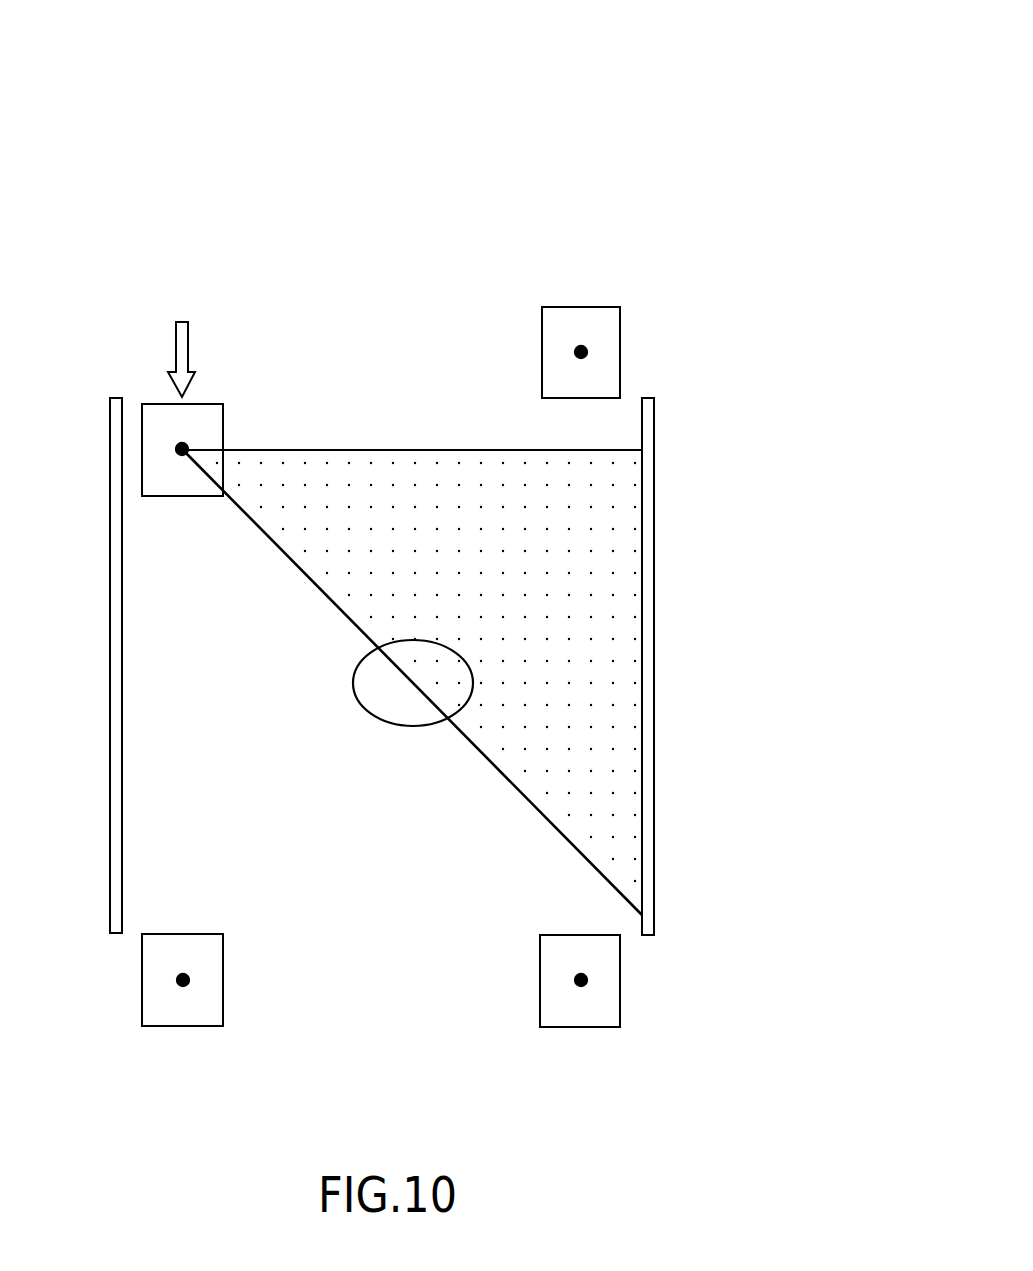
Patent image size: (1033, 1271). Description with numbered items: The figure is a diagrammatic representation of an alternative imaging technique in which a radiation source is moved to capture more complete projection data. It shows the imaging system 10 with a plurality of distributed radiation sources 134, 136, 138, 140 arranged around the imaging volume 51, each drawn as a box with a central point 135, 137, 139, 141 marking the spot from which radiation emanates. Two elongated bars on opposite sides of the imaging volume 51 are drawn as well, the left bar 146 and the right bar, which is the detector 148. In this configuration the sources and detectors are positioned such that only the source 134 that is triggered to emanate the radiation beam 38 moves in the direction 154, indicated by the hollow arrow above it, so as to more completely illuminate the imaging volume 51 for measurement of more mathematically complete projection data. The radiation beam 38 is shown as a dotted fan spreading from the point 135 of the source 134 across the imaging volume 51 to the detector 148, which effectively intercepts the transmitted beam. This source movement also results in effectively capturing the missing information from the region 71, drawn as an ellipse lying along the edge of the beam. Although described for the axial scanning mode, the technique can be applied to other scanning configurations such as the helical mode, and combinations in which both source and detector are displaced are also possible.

The imaging system 10 is at (762, 87).
The radiation beam 38 is at (334, 588).
The imaging volume 51 is at (415, 824).
The region 71 is at (374, 693).
The source 134 is at (182, 497).
The first transducer element 135 is at (189, 447).
The source 136 is at (223, 980).
The second transducer element 137 is at (182, 974).
The source 138 is at (542, 354).
The third transducer element 139 is at (580, 346).
The source 140 is at (540, 988).
The fourth transducer element 141 is at (581, 987).
The left wall 146 is at (110, 687).
The detector 148 is at (655, 874).
The direction 154 is at (175, 348).